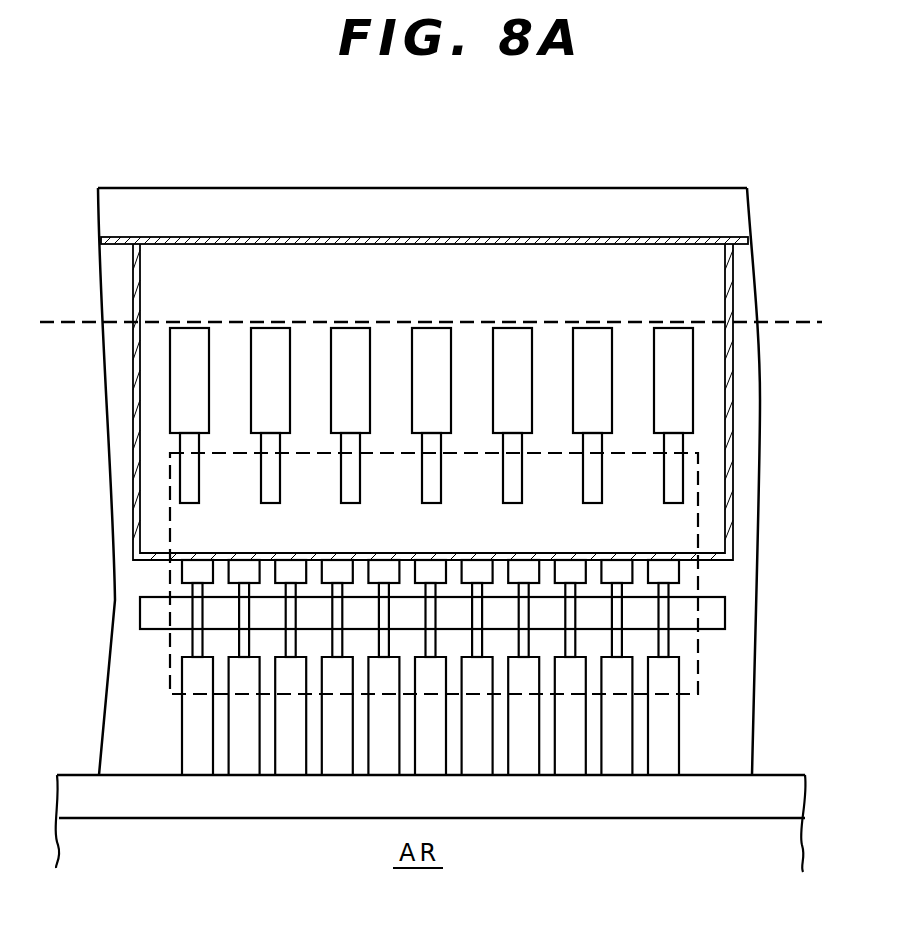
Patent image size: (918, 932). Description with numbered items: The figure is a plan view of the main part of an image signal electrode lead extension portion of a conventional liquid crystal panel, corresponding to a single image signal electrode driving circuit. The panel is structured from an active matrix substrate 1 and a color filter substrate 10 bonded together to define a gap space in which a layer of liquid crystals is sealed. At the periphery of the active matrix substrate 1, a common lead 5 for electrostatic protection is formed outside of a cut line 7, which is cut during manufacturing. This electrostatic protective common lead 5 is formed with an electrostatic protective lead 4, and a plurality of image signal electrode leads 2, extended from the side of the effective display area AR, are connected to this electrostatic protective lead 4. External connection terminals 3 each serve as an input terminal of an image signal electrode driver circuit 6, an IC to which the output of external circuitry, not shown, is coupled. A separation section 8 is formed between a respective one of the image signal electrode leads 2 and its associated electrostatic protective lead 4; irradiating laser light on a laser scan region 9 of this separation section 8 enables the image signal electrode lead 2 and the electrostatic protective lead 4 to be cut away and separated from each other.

The active matrix substrate 1 is at (105, 500).
The image signal electrode leads 2 is at (195, 736).
The external connection terminals 3 is at (192, 343).
The electrostatic protective lead 4 is at (132, 428).
The common lead for electrostatic protection 5 is at (575, 238).
The image signal electrode driver circuit 6 is at (168, 585).
The cut line 7 is at (787, 320).
The separation section 8 is at (195, 655).
The laser scan region 9 is at (712, 618).
The color filter substrate 10 is at (790, 785).